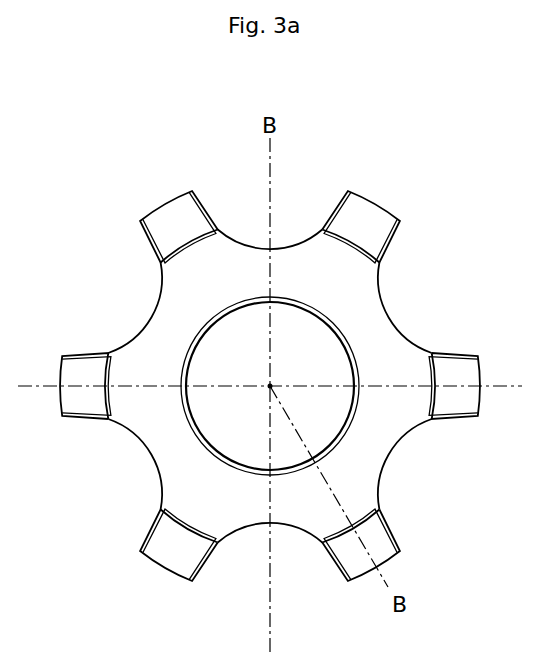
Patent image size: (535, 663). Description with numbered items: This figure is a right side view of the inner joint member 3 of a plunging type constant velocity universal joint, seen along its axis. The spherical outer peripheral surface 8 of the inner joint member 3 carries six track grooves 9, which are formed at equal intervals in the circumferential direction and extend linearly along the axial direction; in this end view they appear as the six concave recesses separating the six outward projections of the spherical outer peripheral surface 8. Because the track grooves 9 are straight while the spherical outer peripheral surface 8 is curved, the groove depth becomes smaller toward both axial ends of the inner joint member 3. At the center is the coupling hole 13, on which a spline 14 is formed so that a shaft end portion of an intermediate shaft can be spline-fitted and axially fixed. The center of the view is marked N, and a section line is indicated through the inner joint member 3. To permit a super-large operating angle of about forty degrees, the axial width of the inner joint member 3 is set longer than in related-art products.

The inner joint member 3 is at (382, 202).
The spherical outer peripheral surface 8 is at (160, 568).
The track grooves 9 is at (294, 243).
The coupling hole 13 is at (270, 386).
The spline 14 is at (307, 309).
The axis of rotation N is at (266, 388).